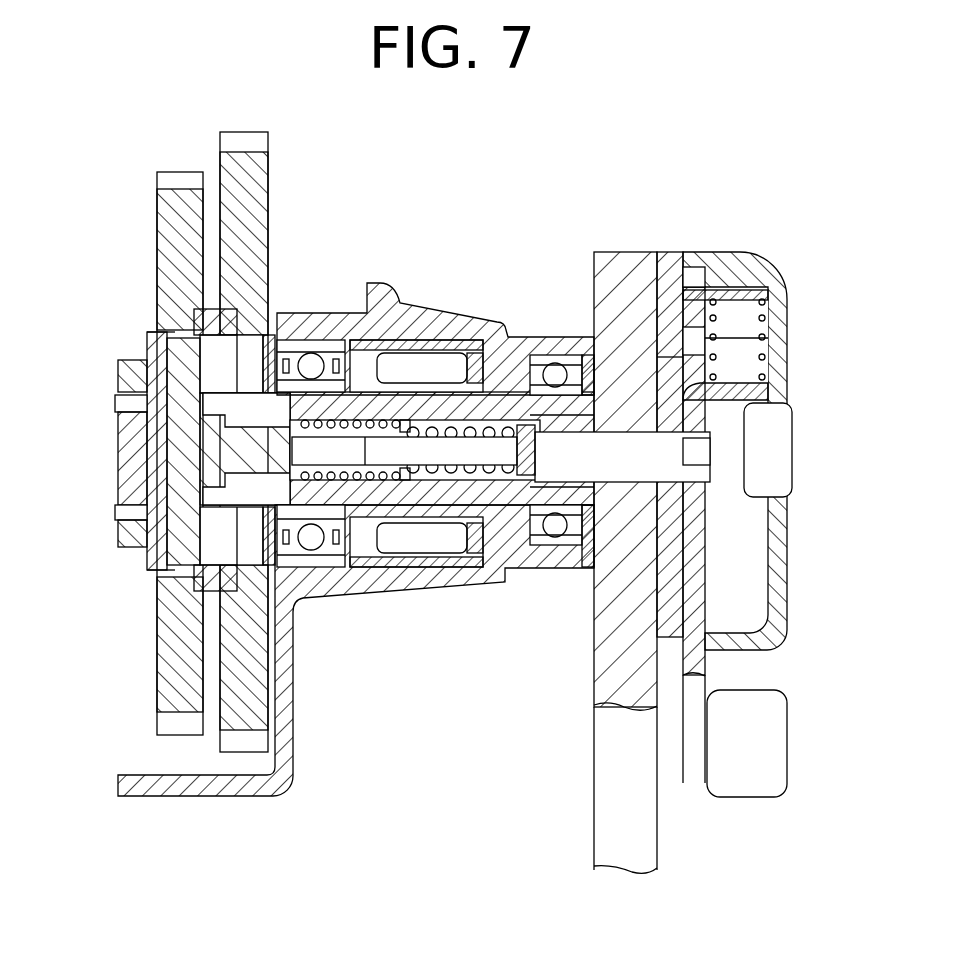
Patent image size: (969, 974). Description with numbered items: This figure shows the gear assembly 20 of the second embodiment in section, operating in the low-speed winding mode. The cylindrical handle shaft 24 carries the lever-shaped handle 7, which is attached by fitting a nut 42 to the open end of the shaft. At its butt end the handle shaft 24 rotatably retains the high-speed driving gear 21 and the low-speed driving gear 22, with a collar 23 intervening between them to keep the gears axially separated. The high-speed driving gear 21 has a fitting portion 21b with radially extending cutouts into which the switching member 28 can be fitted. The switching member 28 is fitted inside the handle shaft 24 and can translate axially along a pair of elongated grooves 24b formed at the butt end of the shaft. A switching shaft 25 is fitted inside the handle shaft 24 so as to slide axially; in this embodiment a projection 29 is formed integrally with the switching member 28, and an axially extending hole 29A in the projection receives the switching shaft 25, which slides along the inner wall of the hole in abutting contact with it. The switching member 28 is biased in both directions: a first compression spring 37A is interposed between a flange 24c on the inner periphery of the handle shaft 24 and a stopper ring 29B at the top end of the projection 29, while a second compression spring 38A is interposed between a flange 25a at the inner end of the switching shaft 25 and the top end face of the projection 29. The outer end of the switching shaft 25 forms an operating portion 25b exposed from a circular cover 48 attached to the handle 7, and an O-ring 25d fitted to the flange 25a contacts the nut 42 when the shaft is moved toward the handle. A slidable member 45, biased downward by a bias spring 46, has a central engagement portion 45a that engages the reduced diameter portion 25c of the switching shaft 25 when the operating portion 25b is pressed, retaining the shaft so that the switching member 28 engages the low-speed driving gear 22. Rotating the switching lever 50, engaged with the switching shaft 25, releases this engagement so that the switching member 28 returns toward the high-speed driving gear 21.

The handle 7 is at (605, 755).
The gear assembly 20 is at (357, 228).
The high-speed driving gear 21 is at (257, 183).
The fitting portion 21b is at (250, 350).
The low-speed driving gear 22 is at (168, 213).
The collar 23 is at (190, 312).
The handle shaft 24 is at (422, 520).
The elongated grooves 24b is at (200, 457).
The flange 24c is at (287, 428).
The switching shaft 25 is at (622, 445).
The flange 25a is at (536, 380).
The operating portion 25b is at (780, 450).
The reduced diameter portion 25c is at (698, 453).
The O-ring 25d is at (548, 520).
The switching member 28 is at (177, 361).
The projection 29 is at (167, 560).
The hole 29A is at (352, 422).
The stopper ring 29B is at (430, 425).
The compression spring 37A is at (375, 548).
The compression spring 38A is at (465, 548).
The nut 42 is at (688, 282).
The slidable member 45 is at (737, 380).
The engagement portion 45a is at (700, 432).
The bias spring 46 is at (767, 306).
The circular cover 48 is at (753, 260).
The switching lever 50 is at (765, 748).